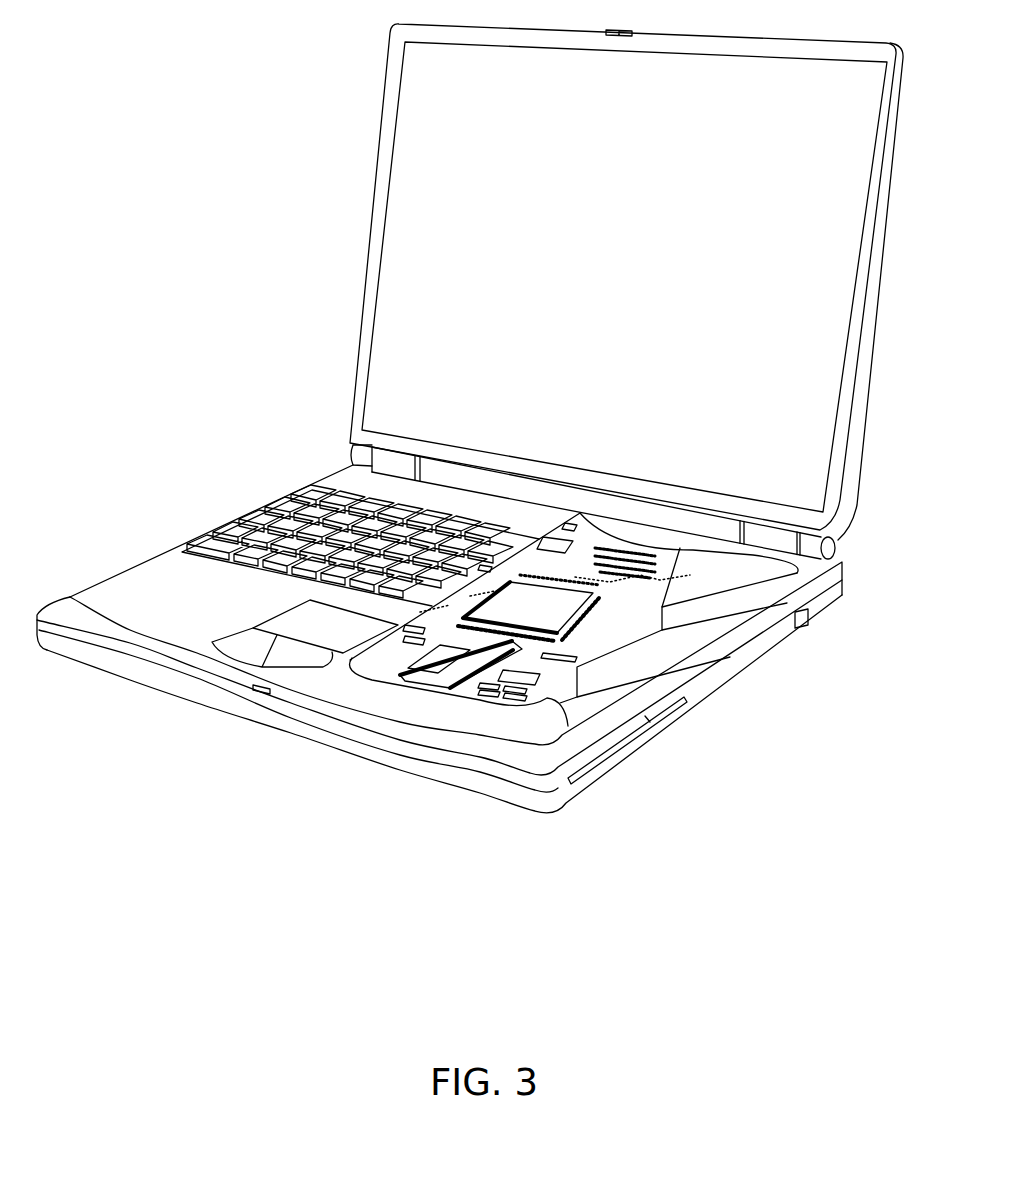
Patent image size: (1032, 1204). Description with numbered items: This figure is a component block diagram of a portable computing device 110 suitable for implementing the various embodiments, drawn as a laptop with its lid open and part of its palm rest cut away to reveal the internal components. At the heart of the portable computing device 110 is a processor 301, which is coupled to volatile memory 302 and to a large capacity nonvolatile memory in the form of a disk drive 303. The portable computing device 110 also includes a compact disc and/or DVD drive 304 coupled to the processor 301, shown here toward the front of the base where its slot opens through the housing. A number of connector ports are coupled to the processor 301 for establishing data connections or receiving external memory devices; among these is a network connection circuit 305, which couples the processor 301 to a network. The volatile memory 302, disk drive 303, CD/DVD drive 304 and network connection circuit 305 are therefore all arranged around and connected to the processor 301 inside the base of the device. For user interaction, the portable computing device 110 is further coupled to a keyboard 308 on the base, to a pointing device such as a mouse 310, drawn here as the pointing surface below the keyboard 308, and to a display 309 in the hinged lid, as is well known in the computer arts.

The portable computing device 110 is at (88, 165).
The processor 301 is at (553, 622).
The volatile memory 302 is at (455, 665).
The disk drive 303 is at (585, 705).
The compact disc (CD) and/or DVD drive 304 is at (660, 653).
The network connection circuit 305 is at (733, 593).
The keyboard 308 is at (233, 537).
The display 309 is at (828, 495).
The mouse 310 is at (283, 625).